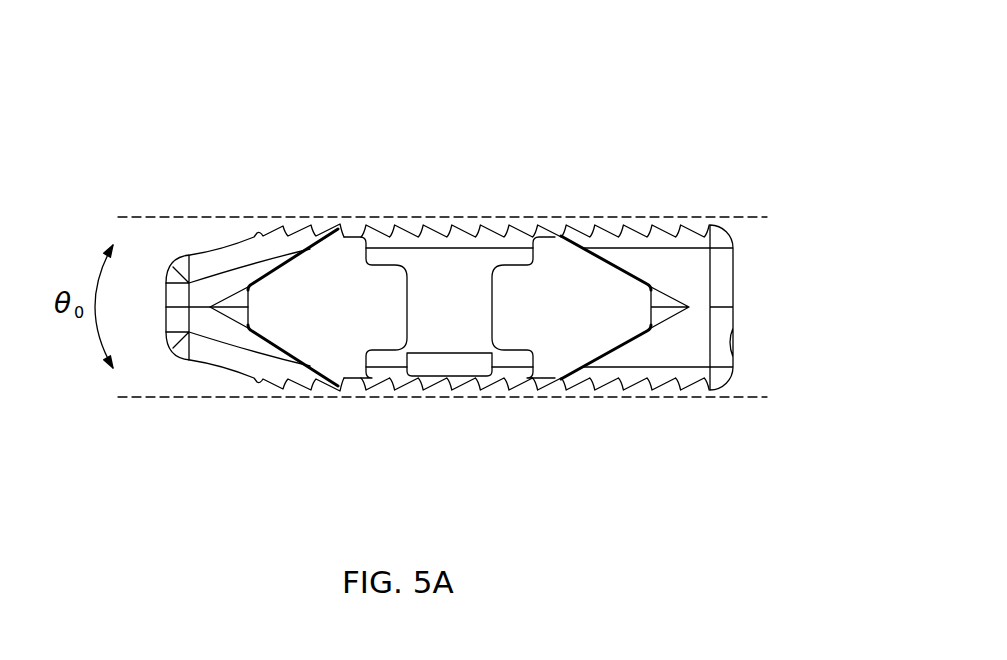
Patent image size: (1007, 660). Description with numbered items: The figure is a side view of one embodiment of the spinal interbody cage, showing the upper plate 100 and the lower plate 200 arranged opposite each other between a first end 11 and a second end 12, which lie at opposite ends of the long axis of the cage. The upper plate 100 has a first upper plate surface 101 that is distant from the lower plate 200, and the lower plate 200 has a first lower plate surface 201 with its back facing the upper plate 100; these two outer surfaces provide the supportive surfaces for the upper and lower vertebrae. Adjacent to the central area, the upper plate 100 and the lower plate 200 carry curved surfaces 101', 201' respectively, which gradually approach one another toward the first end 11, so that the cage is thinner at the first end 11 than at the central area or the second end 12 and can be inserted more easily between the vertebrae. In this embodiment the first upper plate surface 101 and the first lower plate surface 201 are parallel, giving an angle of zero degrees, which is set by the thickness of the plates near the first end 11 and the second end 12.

The upper plate 100 is at (522, 160).
The lower plate 200 is at (522, 455).
The first upper plate surface 101 is at (535, 175).
The curved surface of the upper plate 101' is at (255, 191).
The first lower plate surface 201 is at (535, 428).
The curved surface of the lower plate 201' is at (247, 405).
The first end 11 is at (152, 325).
The second end 12 is at (757, 330).